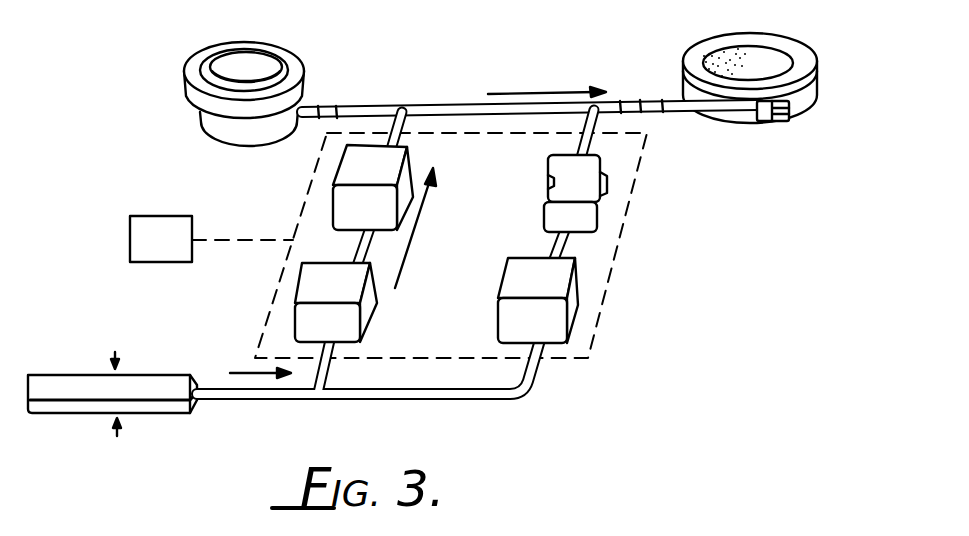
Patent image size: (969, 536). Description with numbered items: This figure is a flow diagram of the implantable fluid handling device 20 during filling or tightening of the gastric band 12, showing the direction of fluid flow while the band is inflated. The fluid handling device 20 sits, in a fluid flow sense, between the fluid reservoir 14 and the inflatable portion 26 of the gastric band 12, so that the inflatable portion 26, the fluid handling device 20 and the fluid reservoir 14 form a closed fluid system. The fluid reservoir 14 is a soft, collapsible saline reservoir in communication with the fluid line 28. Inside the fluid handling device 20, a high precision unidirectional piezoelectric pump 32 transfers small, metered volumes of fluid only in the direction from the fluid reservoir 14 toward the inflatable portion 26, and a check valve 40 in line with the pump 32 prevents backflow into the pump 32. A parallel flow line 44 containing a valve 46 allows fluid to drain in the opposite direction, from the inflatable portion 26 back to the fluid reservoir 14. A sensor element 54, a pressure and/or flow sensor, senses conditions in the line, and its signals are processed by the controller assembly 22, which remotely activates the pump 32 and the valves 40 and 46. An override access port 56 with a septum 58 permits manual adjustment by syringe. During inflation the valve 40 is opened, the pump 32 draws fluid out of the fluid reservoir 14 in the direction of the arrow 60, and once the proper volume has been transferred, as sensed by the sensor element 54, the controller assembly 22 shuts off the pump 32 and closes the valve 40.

The gastric band 12 is at (787, 126).
The fluid reservoir 14 is at (76, 382).
The fluid handling device 20 is at (628, 244).
The controller assembly 22 is at (176, 253).
The inflatable portion 26 is at (770, 57).
The fluid line 28 is at (250, 399).
The piezoelectric pump 32 is at (312, 290).
The check valve 40 is at (343, 170).
The parallel flow line 44 is at (553, 238).
The valve 46 is at (508, 315).
The sensor element 54 is at (552, 163).
The override access port 56 is at (294, 40).
The septum 58 is at (236, 58).
The arrow 60 is at (406, 261).